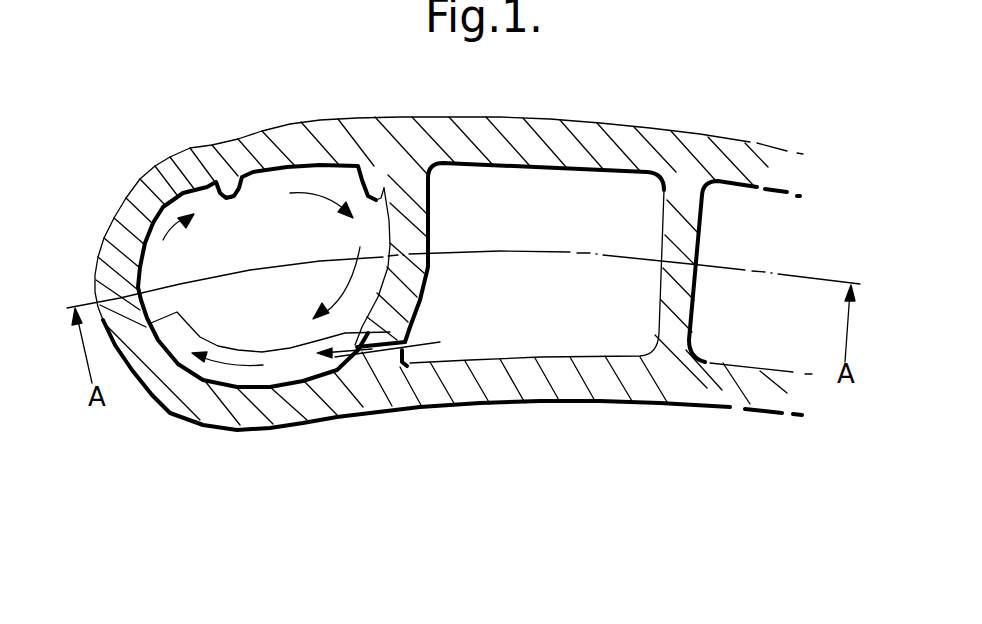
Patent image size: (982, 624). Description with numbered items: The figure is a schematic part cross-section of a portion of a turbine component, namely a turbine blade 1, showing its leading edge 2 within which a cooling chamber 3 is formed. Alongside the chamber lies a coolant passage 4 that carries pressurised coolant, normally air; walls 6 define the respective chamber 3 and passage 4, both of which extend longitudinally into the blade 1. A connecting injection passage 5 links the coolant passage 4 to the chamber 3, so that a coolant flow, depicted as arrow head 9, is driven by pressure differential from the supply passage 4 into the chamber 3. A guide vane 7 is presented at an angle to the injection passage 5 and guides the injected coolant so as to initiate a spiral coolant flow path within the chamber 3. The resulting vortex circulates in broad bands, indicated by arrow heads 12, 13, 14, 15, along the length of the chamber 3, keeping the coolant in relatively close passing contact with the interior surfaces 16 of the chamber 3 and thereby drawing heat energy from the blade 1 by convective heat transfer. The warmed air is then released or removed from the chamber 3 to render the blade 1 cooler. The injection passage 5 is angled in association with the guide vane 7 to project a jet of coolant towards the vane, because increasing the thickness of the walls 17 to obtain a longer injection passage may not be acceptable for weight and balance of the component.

The turbine blade 1 is at (196, 145).
The leading edge 2 is at (141, 180).
The cooling chamber 3 is at (260, 217).
The coolant passage 4 is at (517, 190).
The injection passage 5 is at (390, 357).
The walls 6 is at (747, 377).
The guide vane 7 is at (288, 367).
The coolant flow 9 is at (360, 358).
The arrow head 12 is at (233, 368).
The arrow head 13 is at (162, 252).
The arrow head 14 is at (317, 190).
The arrow head 15 is at (417, 286).
The interior surfaces 16 is at (242, 183).
The walls 17 is at (405, 236).